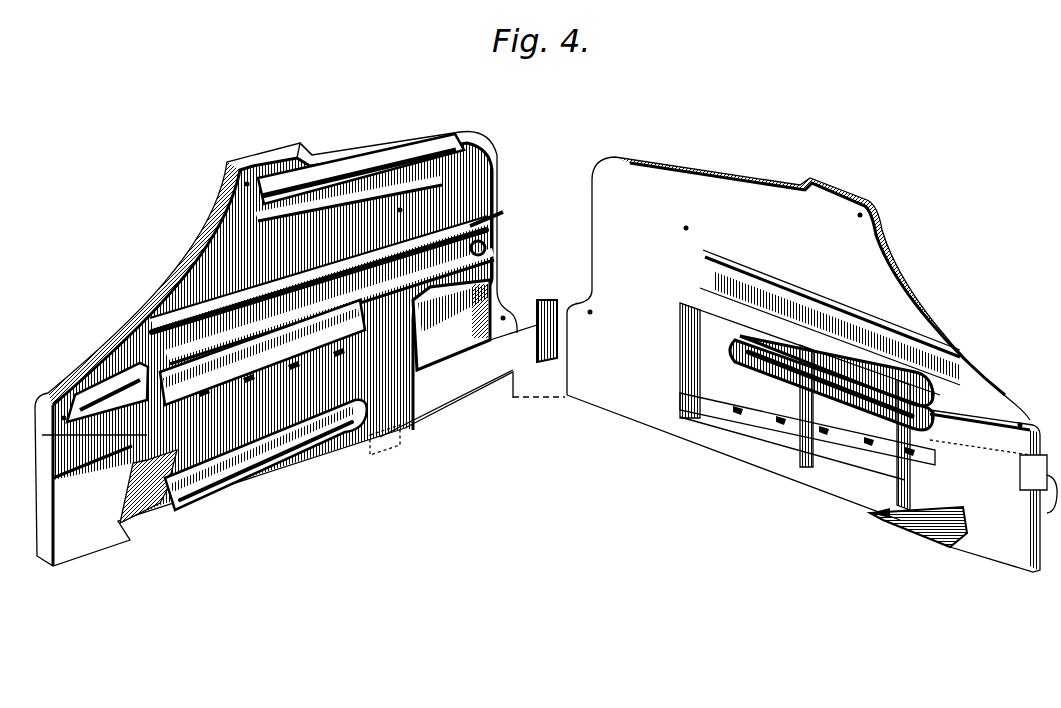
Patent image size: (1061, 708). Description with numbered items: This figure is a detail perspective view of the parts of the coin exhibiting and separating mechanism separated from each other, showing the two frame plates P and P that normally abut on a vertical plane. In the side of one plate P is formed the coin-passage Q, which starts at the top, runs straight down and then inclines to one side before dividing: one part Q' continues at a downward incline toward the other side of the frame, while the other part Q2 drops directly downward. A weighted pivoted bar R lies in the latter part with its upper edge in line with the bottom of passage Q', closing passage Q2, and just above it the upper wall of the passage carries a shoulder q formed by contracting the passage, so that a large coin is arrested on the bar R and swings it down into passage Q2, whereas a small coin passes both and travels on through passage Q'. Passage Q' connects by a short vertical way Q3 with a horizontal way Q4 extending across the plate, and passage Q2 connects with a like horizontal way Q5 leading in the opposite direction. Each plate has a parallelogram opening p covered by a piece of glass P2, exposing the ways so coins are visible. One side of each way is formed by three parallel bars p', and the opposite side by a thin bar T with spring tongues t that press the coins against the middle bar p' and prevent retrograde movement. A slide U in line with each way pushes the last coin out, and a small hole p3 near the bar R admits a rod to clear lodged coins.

The frame plate P is at (190, 258).
The coin-passage Q is at (289, 132).
The coin-passage branch Q' is at (326, 249).
The coin-passage branch Q2 is at (386, 365).
The vertical way Q3 is at (110, 366).
The horizontal way Q4 is at (42, 455).
The horizontal way Q5 is at (150, 505).
The opening p is at (523, 406).
The parallel bar p' is at (604, 391).
The hole p3 is at (504, 212).
The shoulder q is at (488, 243).
The pivoted bar R is at (493, 272).
The thin bar T is at (292, 440).
The spring tongue t is at (262, 372).
The piece of glass P2 is at (362, 432).
The slide U is at (758, 459).